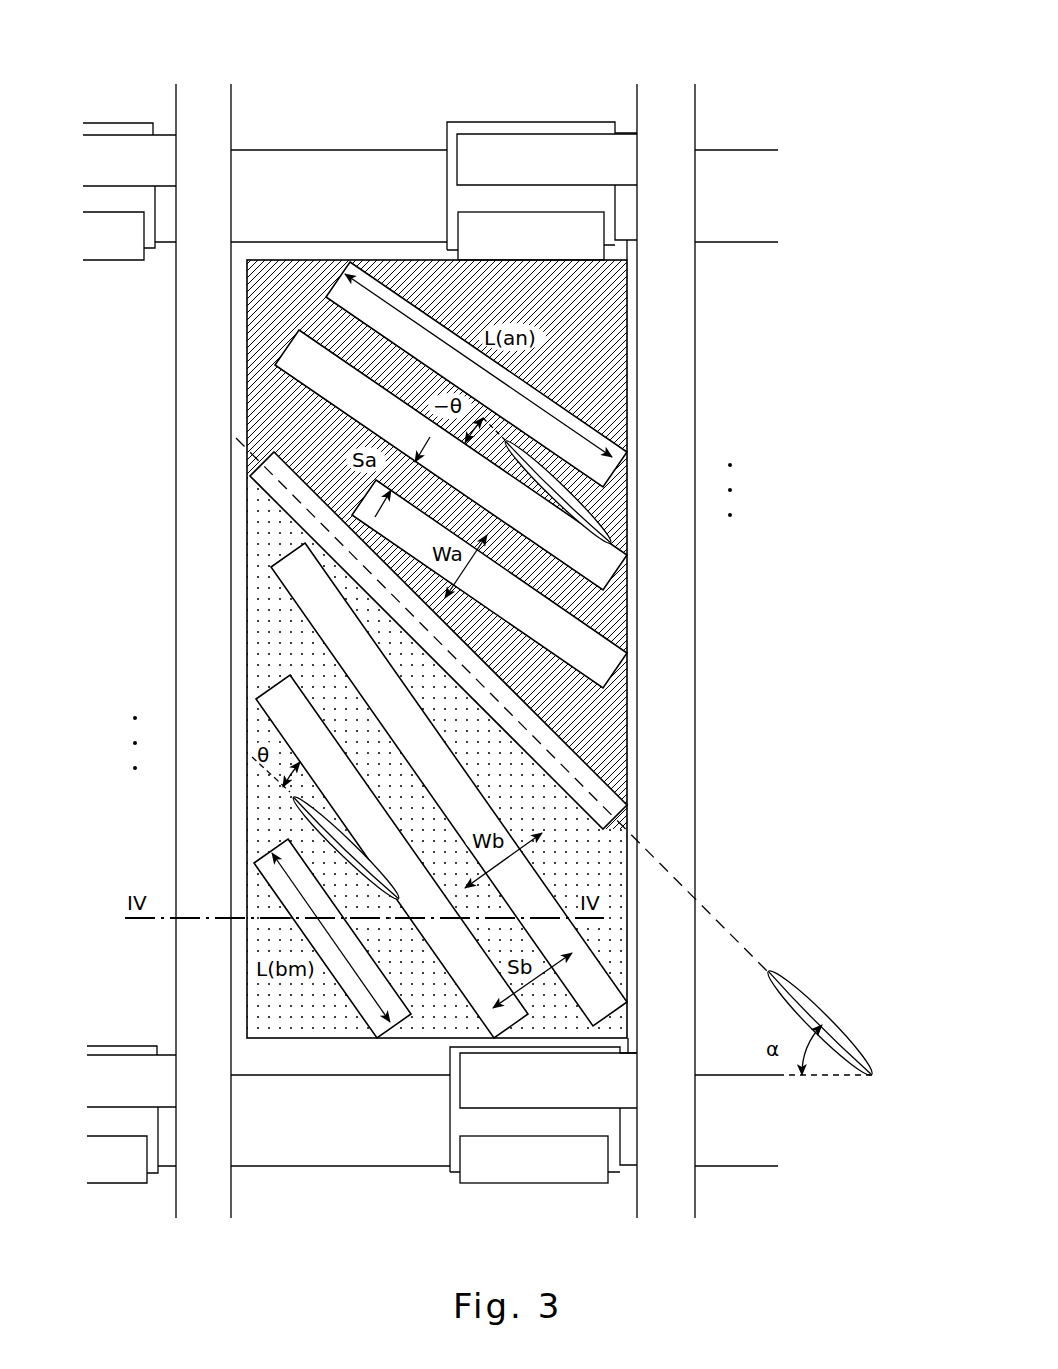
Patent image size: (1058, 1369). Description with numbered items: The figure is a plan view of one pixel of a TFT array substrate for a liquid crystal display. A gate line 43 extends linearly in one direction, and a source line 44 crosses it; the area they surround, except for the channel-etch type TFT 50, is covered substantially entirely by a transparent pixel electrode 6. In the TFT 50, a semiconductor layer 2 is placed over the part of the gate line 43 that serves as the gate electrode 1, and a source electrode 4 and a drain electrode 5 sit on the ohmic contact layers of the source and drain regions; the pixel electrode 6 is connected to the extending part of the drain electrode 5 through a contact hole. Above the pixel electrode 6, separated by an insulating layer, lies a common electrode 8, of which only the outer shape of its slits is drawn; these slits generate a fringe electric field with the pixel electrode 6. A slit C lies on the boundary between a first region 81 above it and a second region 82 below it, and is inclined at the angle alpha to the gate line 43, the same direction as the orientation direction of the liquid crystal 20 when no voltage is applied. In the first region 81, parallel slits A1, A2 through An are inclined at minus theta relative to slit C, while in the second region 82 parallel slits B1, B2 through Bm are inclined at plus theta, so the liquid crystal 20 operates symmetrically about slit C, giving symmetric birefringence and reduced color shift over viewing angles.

The source line 44 is at (198, 97).
The TFT 50 is at (526, 104).
The source electrode 4 is at (470, 150).
The gate electrode 1 is at (438, 190).
The semiconductor layer 2 is at (585, 200).
The drain electrode 5 is at (470, 230).
The gate line 43 is at (758, 200).
The pixel electrode 6 is at (247, 320).
The common electrode 8 is at (262, 398).
The first region 81 is at (437, 532).
The second region 82 is at (437, 757).
The liquid crystal 20 is at (582, 503).
The slit An is at (607, 463).
The slit A2 is at (607, 568).
The slit A1 is at (607, 668).
The slit B1 is at (283, 565).
The slit B2 is at (272, 690).
The slit Bm is at (278, 852).
The slit C is at (614, 810).